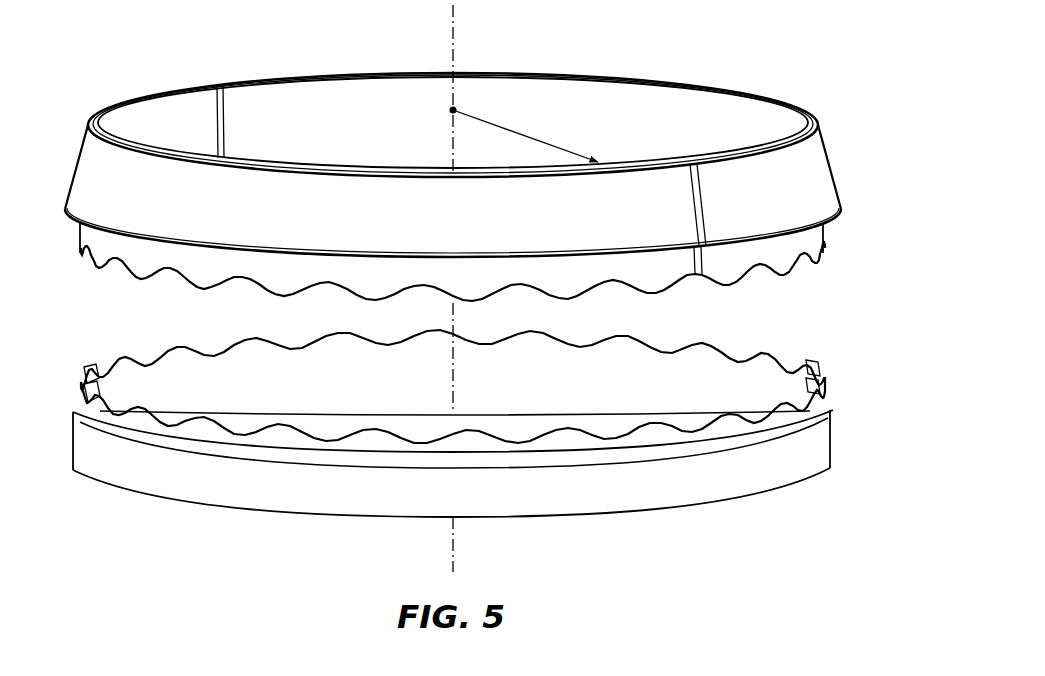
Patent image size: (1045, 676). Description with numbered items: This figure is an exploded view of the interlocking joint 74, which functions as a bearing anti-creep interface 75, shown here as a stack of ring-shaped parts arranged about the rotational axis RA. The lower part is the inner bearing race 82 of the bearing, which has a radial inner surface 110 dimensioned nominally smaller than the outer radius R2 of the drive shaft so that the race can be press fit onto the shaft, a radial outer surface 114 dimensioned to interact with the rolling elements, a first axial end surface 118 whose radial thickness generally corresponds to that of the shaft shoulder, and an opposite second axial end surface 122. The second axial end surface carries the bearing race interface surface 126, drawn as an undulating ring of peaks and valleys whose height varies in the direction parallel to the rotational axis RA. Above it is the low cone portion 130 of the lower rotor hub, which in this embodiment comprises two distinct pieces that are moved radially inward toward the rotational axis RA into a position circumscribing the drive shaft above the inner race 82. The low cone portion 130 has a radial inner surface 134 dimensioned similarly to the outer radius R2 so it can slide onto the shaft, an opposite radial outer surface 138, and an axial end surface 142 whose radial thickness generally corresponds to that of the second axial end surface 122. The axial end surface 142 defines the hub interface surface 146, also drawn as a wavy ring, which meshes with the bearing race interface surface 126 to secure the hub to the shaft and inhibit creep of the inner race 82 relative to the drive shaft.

The interlocking joint 74 is at (495, 442).
The bearing anti-creep interface 75 is at (476, 442).
The inner bearing race 82 is at (481, 496).
The radial inner surface 110 is at (130, 387).
The radial outer surface 114 is at (772, 468).
The first axial end surface 118 is at (657, 517).
The second axial end surface 122 is at (490, 386).
The bearing race interface surface 126 is at (767, 345).
The low cone portion 130 is at (484, 142).
The radial inner surface 134 is at (768, 142).
The radial outer surface 138 is at (832, 230).
The axial end surface 142 is at (496, 266).
The hub interface surface 146 is at (783, 280).
The rotational axis RA is at (457, 55).
The outer radius R2 is at (516, 130).